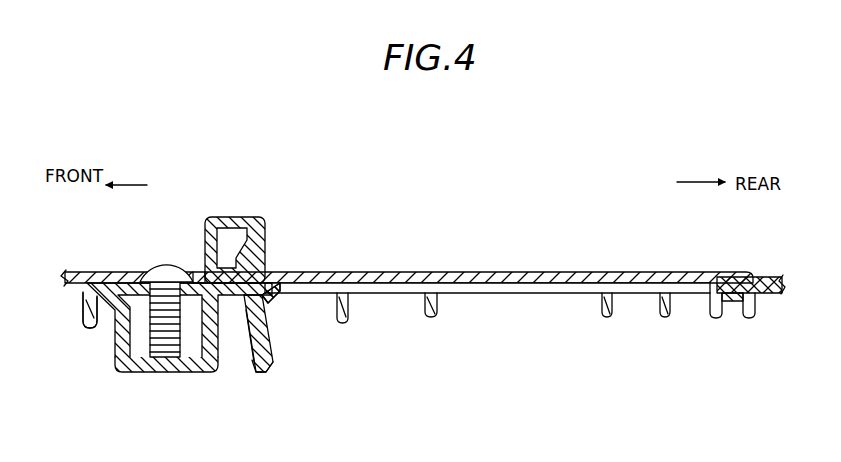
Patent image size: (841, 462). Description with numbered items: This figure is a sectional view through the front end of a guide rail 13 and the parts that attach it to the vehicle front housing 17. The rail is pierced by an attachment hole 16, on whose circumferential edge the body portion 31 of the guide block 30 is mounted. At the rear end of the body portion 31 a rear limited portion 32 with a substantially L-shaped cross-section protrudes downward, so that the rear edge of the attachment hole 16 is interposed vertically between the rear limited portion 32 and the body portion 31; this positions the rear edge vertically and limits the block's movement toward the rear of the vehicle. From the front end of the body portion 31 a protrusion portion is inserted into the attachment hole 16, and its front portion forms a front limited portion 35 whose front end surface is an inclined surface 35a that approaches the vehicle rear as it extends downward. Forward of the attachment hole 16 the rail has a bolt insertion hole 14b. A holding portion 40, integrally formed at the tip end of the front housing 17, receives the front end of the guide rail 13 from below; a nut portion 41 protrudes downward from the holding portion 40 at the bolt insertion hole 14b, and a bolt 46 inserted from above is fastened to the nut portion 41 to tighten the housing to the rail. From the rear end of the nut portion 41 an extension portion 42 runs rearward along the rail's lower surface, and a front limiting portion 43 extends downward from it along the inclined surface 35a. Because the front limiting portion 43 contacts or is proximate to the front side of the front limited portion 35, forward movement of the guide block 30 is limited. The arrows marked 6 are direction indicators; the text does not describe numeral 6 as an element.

The pressing direction 6 is at (250, 323).
The guide rail 13 is at (768, 276).
The bolt insertion hole 14b is at (162, 279).
The attachment hole 16 is at (222, 222).
The front housing 17 is at (80, 271).
The guide block 30 is at (596, 270).
The body portion 31 is at (478, 271).
The rear limited portion 32 is at (735, 306).
The front limited portion 35 is at (269, 335).
The inclined surface 35a is at (255, 336).
The holding portion 40 is at (114, 347).
The nut portion 41 is at (136, 362).
The extension portion 42 is at (269, 284).
The front limiting portion 43 is at (266, 373).
The bolt 46 is at (195, 281).